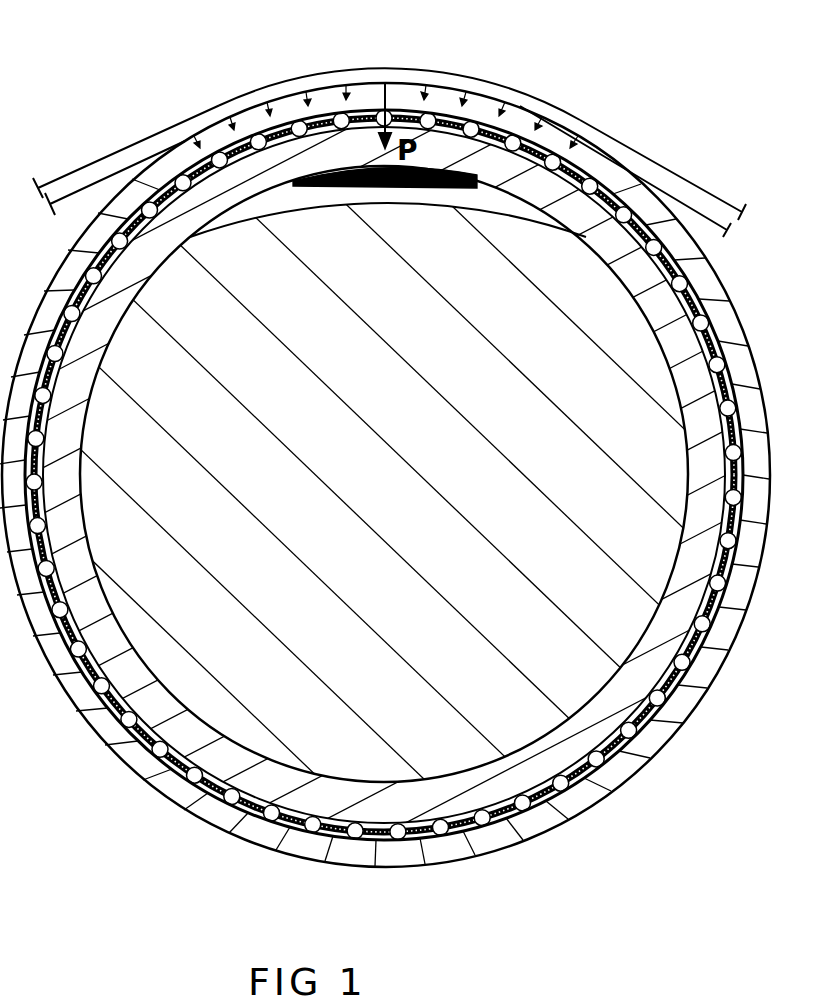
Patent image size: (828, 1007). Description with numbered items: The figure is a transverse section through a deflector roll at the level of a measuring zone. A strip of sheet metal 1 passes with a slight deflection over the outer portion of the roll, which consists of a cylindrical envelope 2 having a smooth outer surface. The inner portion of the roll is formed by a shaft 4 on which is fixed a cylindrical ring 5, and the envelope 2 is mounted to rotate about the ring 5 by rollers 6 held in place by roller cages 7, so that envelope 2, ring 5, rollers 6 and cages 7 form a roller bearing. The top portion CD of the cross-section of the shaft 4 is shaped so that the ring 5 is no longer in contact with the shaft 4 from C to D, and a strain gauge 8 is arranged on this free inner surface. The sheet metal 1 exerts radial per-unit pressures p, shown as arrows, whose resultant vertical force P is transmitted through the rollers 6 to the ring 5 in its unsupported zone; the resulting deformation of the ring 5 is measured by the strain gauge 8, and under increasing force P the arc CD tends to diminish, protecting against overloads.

The sheet metal 1 is at (320, 84).
The cylindrical envelope 2 is at (448, 96).
The shaft 4 is at (232, 305).
The cylindrical rings 5 is at (568, 202).
The rollers 6 is at (522, 136).
The roller cages 7 is at (650, 223).
The strain gauges 8 is at (312, 180).